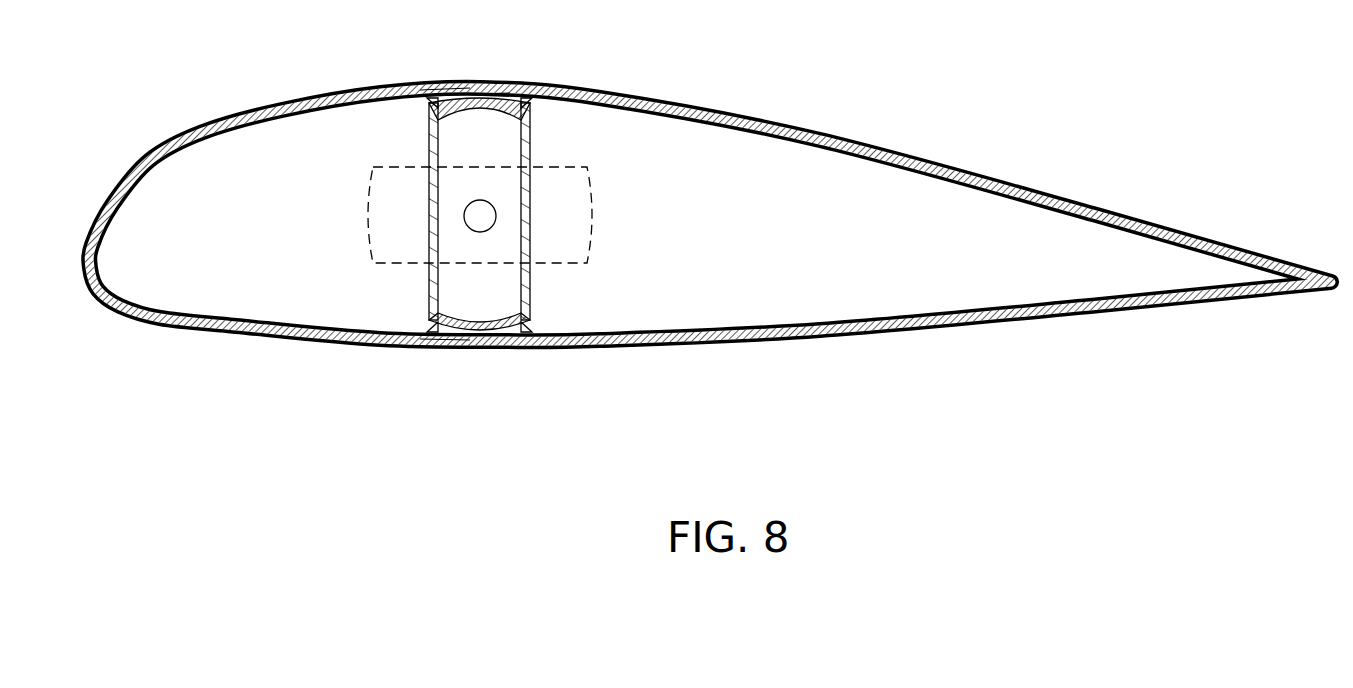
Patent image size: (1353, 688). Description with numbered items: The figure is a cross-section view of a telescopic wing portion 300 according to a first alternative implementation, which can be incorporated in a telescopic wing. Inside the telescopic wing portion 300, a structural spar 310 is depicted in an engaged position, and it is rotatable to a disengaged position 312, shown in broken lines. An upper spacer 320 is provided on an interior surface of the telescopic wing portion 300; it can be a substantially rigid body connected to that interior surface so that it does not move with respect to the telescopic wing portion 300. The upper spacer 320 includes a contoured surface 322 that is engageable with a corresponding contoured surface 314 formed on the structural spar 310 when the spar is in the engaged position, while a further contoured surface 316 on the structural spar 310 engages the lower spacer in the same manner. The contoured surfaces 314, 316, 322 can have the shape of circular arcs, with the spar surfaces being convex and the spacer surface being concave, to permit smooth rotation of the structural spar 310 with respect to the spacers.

The telescopic wing portion 300 is at (855, 131).
The structural spar 310 is at (531, 140).
The disengaged position 312 is at (598, 207).
The contoured surface 314 is at (447, 90).
The contoured surface 316 is at (437, 350).
The upper spacer 320 is at (430, 100).
The contoured surface 322 is at (487, 90).